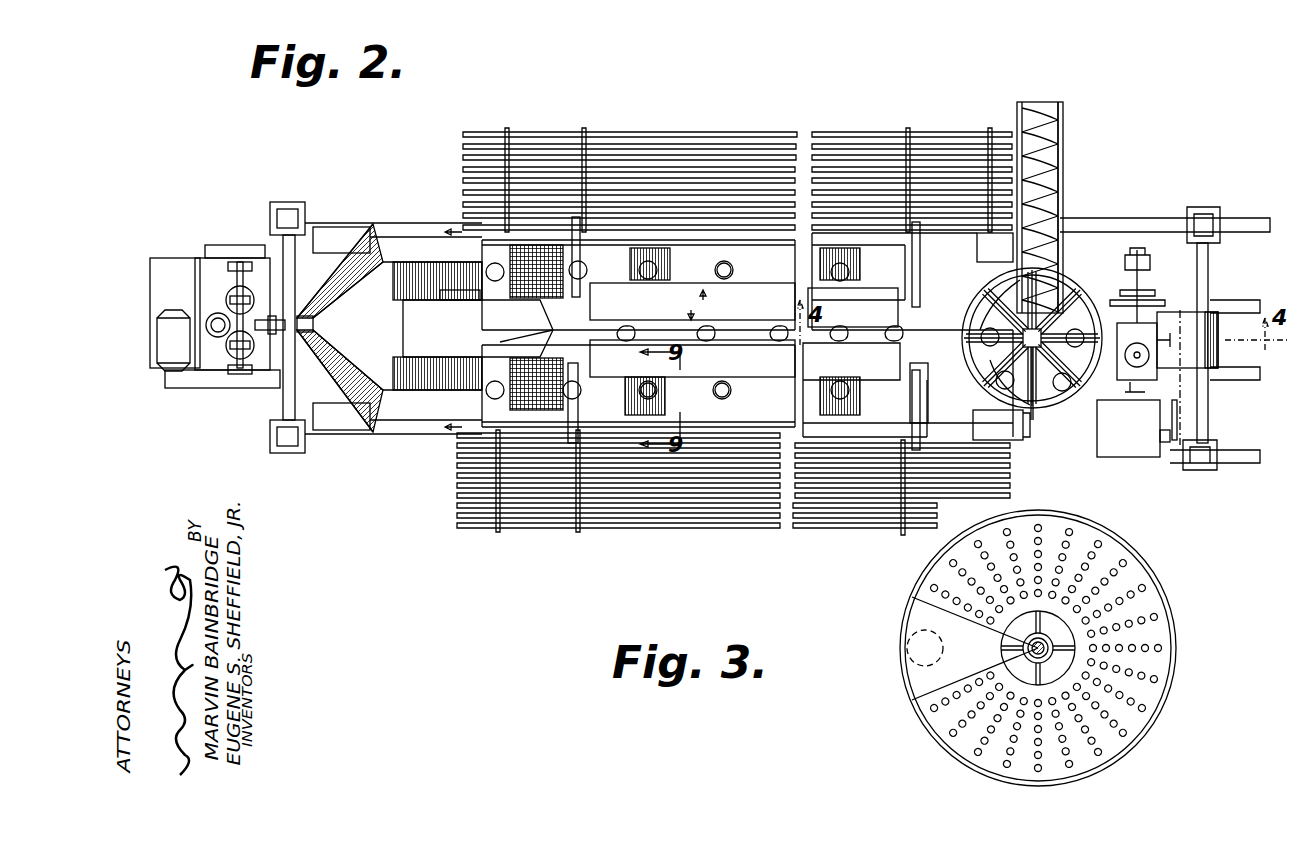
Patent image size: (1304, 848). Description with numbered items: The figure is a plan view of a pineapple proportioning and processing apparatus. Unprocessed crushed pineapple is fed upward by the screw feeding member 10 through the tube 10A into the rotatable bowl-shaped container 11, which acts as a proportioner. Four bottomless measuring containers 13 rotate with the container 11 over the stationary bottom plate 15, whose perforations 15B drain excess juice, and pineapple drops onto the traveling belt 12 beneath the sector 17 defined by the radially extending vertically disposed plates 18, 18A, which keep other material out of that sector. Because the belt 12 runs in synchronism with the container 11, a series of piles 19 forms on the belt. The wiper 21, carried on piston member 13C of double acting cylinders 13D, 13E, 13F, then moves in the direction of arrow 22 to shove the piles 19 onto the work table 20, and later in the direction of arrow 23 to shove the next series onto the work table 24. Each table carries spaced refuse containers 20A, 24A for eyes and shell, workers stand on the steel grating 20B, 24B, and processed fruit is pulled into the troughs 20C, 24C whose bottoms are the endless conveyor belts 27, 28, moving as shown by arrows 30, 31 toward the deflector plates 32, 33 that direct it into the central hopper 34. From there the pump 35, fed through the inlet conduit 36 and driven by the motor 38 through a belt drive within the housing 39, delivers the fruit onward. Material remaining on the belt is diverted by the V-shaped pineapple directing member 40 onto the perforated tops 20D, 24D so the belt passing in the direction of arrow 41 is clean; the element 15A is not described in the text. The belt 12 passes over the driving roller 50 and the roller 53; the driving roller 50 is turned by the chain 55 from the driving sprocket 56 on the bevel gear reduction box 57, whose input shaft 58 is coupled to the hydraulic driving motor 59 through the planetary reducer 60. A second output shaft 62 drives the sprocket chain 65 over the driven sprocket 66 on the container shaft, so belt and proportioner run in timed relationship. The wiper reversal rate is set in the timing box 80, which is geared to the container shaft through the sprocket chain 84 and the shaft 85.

In FIG. 2, the screw feeding member 10 is at (1045, 141).
In FIG. 2, the tube 10A is at (1061, 108).
In FIG. 2, the rotatable bowl-shaped container 11 is at (1047, 389).
In FIG. 2, the traveling belt 12 is at (938, 385).
In FIG. 2, the measuring container 13 is at (975, 318).
In FIG. 3, the measuring container 13 is at (907, 648).
In FIG. 2, the piston member 13C is at (912, 339).
In FIG. 2, the cylinder 13D is at (600, 400).
In FIG. 2, the cylinder 13E is at (910, 400).
In FIG. 2, the cylinder 13F is at (916, 243).
In FIG. 3, the stationary bottom plate 15 is at (1133, 578).
In FIG. 2, the disc pointer 15A is at (520, 336).
In FIG. 3, the perforations 15B is at (1095, 554).
In FIG. 2, the sector 17 is at (980, 336).
In FIG. 3, the sector 17 is at (917, 675).
In FIG. 2, the radially extending vertically disposed plate 18 is at (995, 300).
In FIG. 3, the radially extending vertically disposed plate 18 is at (905, 603).
In FIG. 2, the radially extending vertically disposed plate 18A is at (988, 366).
In FIG. 3, the radially extending vertically disposed plate 18A is at (923, 692).
In FIG. 2, the piles 19 is at (767, 326).
In FIG. 2, the work table 20 is at (747, 383).
In FIG. 2, the refuse container 20A is at (656, 392).
In FIG. 2, the steel grating 20B is at (534, 528).
In FIG. 2, the trough 20C is at (760, 432).
In FIG. 2, the perforated top 20D is at (510, 384).
In FIG. 2, the wiper 21 is at (692, 301).
In FIG. 2, the arrow 22 is at (691, 310).
In FIG. 2, the arrow 23 is at (703, 300).
In FIG. 2, the work table 24 is at (638, 285).
In FIG. 2, the refuse container 24A is at (731, 268).
In FIG. 2, the steel grating 24B is at (485, 142).
In FIG. 2, the trough 24C is at (709, 233).
In FIG. 2, the perforated top 24D is at (548, 253).
In FIG. 2, the endless conveyor belt 27 is at (620, 430).
In FIG. 2, the endless conveyor belt 28 is at (627, 235).
In FIG. 2, the arrow 30 is at (460, 429).
In FIG. 2, the arrow 31 is at (460, 230).
In FIG. 2, the deflector plate 32 is at (356, 430).
In FIG. 2, the deflector plate 33 is at (348, 234).
In FIG. 2, the hopper 34 is at (328, 278).
In FIG. 2, the pump 35 is at (230, 302).
In FIG. 2, the inlet conduit 36 is at (276, 330).
In FIG. 2, the motor 38 is at (172, 365).
In FIG. 2, the housing 39 is at (221, 390).
In FIG. 2, the V-shaped pineapple directing member 40 is at (476, 310).
In FIG. 2, the arrow 41 is at (495, 325).
In FIG. 2, the driving roller 50 is at (1190, 382).
In FIG. 2, the roller 53 is at (438, 358).
In FIG. 2, the chain 55 is at (1184, 390).
In FIG. 2, the driving sprocket 56 is at (1128, 392).
In FIG. 2, the bevel gear reduction box 57 is at (216, 335).
In FIG. 2, the input shaft 58 is at (1140, 298).
In FIG. 2, the hydraulic driving motor 59 is at (1142, 262).
In FIG. 2, the planetary reducer 60 is at (1116, 300).
In FIG. 2, the second output shaft 62 is at (1142, 353).
In FIG. 2, the sprocket chain 65 is at (1066, 402).
In FIG. 2, the driven sprocket 66 is at (1040, 360).
In FIG. 2, the timing box 80 is at (1105, 448).
In FIG. 2, the sprocket chain 84 is at (1184, 409).
In FIG. 2, the shaft 85 is at (1166, 442).